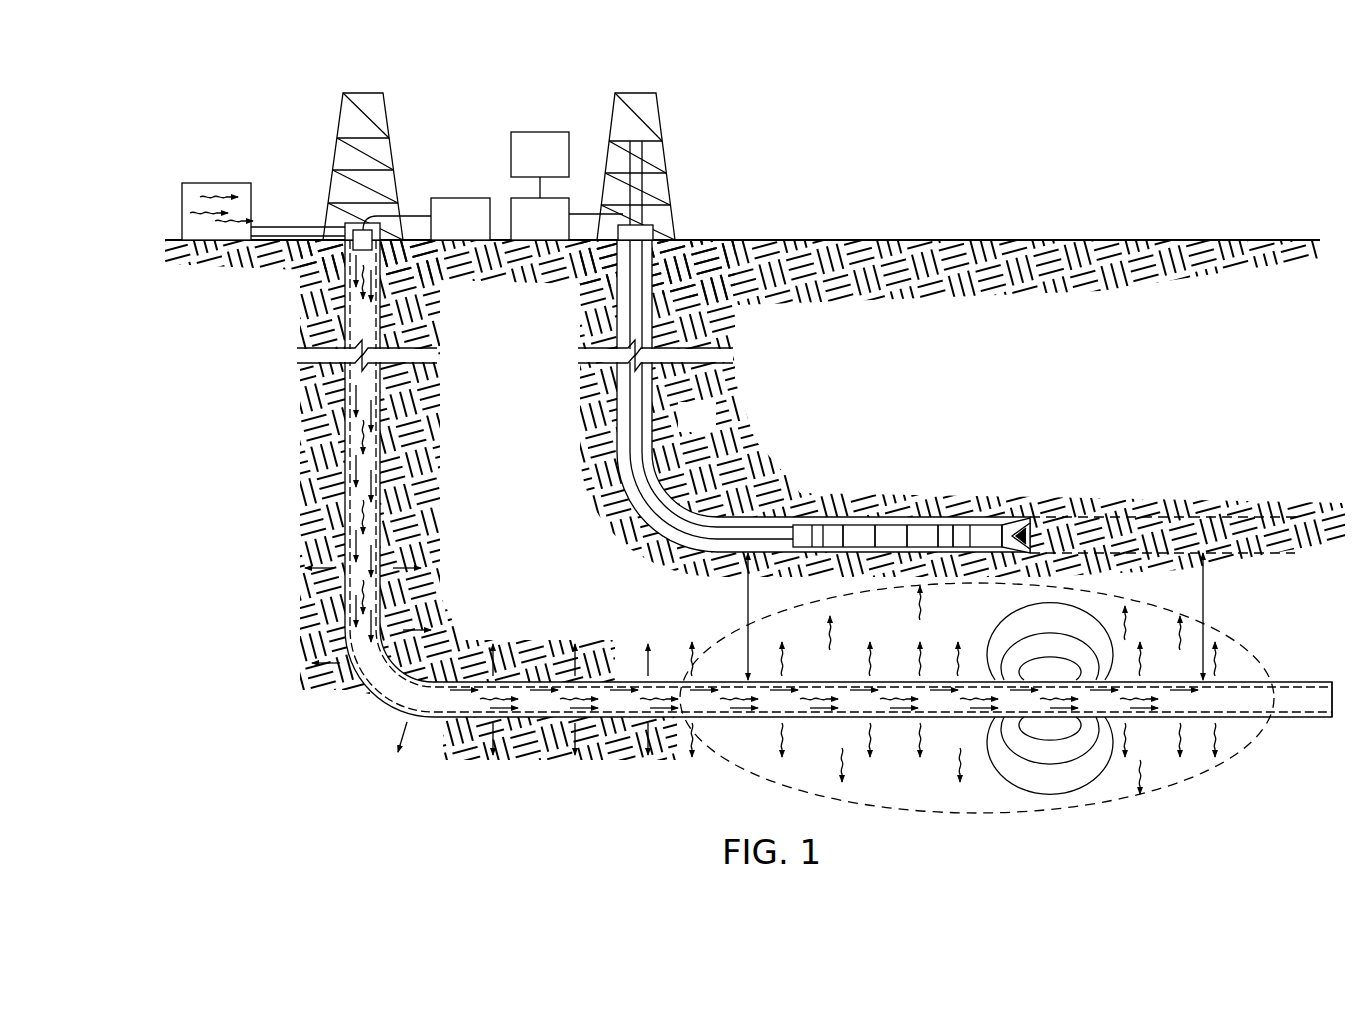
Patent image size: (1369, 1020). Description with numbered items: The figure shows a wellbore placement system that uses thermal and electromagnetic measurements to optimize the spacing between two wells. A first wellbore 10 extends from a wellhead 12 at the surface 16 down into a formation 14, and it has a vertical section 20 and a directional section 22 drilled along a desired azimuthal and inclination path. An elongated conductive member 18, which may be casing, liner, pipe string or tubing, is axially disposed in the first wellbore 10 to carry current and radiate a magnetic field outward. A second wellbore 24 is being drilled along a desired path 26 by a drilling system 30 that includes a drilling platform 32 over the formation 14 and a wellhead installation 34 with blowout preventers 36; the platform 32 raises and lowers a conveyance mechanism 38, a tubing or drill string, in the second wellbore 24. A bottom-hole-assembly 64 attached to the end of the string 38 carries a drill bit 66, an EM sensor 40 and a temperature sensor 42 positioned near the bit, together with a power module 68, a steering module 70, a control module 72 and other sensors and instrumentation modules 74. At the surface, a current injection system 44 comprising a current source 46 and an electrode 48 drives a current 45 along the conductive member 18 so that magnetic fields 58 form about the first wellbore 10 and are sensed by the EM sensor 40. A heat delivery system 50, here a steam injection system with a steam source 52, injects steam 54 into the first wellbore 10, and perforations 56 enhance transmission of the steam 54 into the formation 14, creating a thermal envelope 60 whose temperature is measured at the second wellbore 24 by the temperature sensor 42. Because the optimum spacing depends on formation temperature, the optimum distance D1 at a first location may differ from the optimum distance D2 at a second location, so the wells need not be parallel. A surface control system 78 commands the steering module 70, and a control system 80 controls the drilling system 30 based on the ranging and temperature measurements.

The first wellbore 10 is at (350, 300).
The wellhead 12 is at (355, 228).
The formation 14 is at (713, 429).
The surface 16 is at (1000, 240).
The elongated conductive member 18 is at (345, 443).
The vertical section 20 is at (322, 335).
The directional section 22 is at (1288, 653).
The second wellbore 24 is at (623, 308).
The desired path 26 is at (1160, 528).
The drilling system 30 is at (585, 98).
The drilling platform 32 is at (665, 107).
The wellhead installation 34 is at (322, 155).
The blowout preventers 36 is at (665, 197).
The conveyance mechanism 38 is at (620, 344).
The EM sensor 40 is at (983, 525).
The temperature sensor 42 is at (955, 525).
The current injection system 44 is at (432, 160).
The current 45 is at (373, 482).
The current source 46 is at (476, 231).
The electrode 48 is at (355, 250).
The heat delivery system 50 is at (227, 165).
The steam source 52 is at (198, 183).
The steam 54 is at (192, 213).
The perforations 56 is at (958, 680).
The magnetic fields 58 is at (1085, 785).
The thermal envelope 60 is at (1165, 778).
The bottom-hole-assembly 64 is at (1040, 496).
The drill bit 66 is at (1008, 520).
The power module 68 is at (857, 525).
The steering module 70 is at (940, 525).
The control module 72 is at (905, 525).
The sensors and instrumentation modules 74 is at (888, 525).
The control system 78 is at (555, 231).
The control system 80 is at (555, 167).
The optimum distance at first location D1 is at (753, 616).
The optimum distance at second location D2 is at (1206, 616).